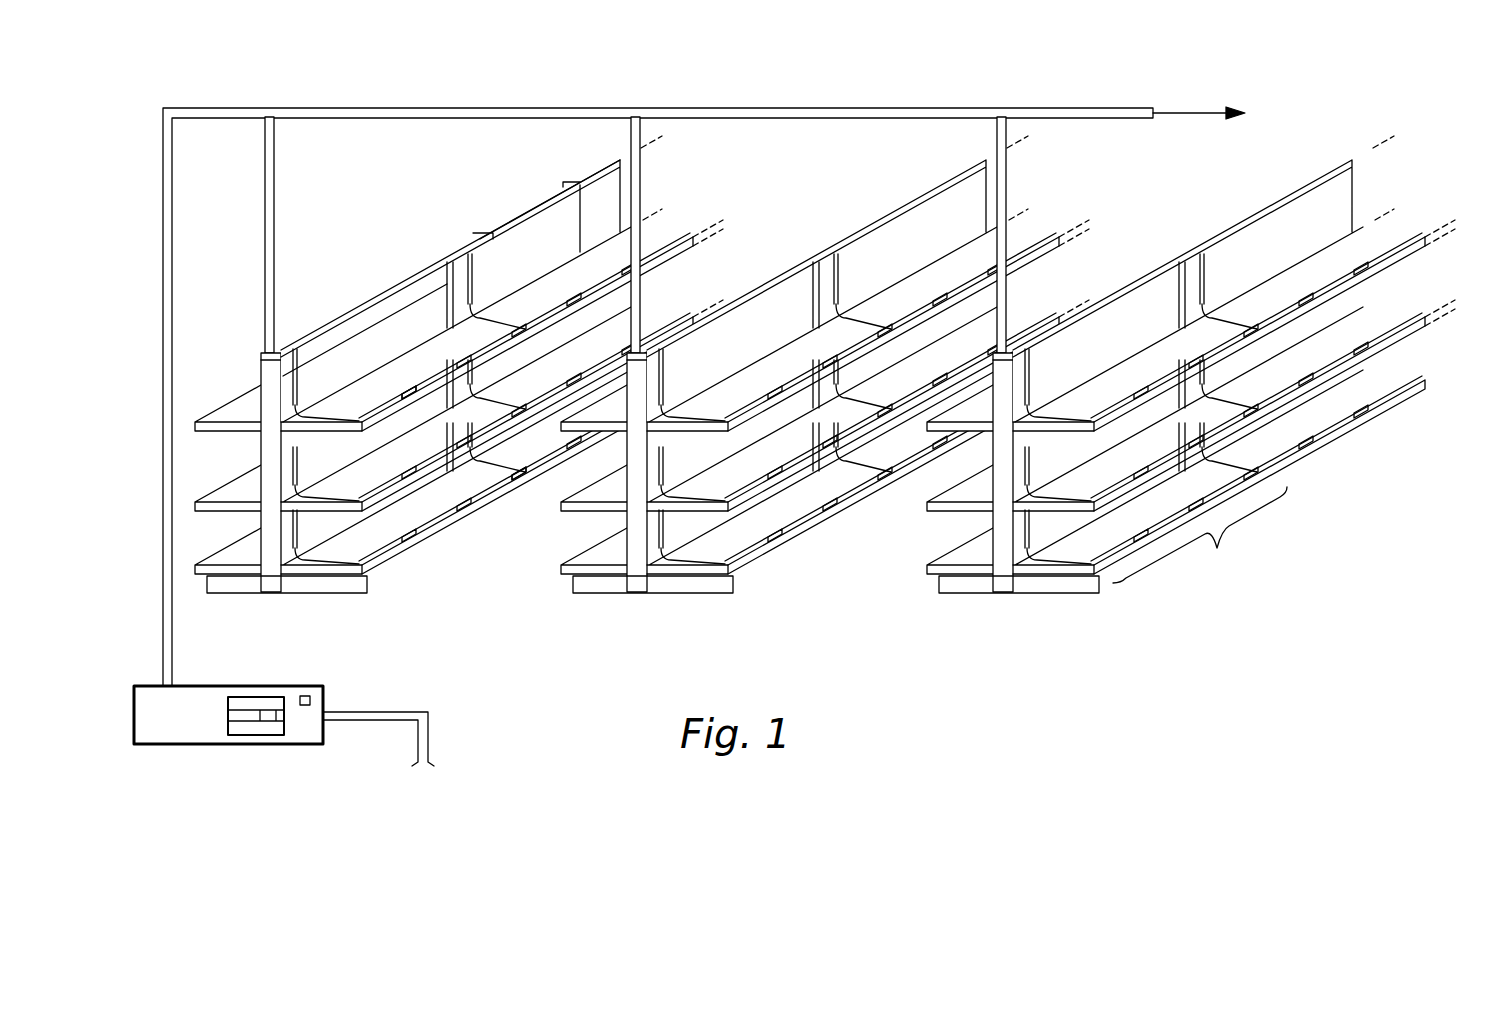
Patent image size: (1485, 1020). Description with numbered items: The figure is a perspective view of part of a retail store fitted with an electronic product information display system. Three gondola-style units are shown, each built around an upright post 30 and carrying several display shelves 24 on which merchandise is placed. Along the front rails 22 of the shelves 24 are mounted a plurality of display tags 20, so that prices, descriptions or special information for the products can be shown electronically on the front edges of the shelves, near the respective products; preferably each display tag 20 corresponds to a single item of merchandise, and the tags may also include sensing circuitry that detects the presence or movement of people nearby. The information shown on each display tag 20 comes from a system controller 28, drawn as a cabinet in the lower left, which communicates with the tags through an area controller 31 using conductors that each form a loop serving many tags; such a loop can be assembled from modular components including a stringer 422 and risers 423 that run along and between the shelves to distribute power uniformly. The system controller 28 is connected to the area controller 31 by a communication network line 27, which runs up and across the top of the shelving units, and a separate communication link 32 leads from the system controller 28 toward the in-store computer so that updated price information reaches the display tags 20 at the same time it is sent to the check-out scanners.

The display tag 20 is at (418, 392).
The front rail 22 is at (378, 573).
The display shelf 24 is at (1308, 383).
The communication network line 27 is at (173, 222).
The system controller 28 is at (218, 748).
The post 30 is at (261, 375).
The area controller 31 is at (311, 318).
The communication link 32 is at (369, 722).
The stringer 422 is at (520, 215).
The riser 423 is at (473, 283).